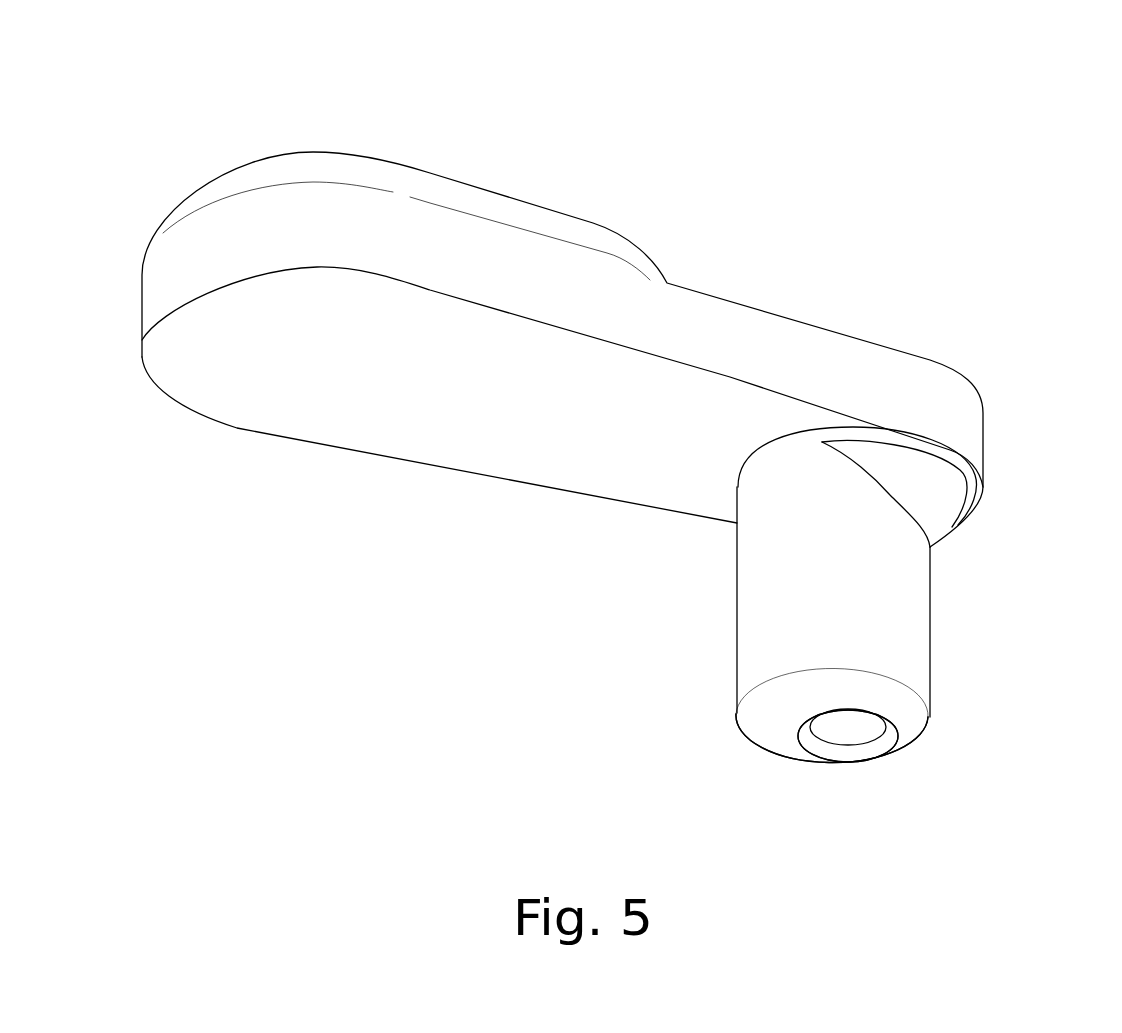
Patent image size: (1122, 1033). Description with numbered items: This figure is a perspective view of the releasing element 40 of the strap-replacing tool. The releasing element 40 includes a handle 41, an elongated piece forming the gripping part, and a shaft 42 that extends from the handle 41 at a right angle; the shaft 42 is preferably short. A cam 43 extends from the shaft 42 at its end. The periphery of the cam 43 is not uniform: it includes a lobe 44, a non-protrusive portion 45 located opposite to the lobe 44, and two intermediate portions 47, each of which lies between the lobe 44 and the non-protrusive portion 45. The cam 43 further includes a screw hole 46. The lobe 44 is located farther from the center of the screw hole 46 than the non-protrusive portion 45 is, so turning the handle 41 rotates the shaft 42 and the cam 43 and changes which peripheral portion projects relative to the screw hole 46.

The releasing element 40 is at (363, 170).
The handle 41 is at (537, 457).
The shaft 42 is at (963, 473).
The cam 43 is at (922, 870).
The lobe 44 is at (777, 710).
The non-protrusive portion 45 is at (897, 750).
The screw hole 46 is at (850, 730).
The intermediate portion 47 is at (877, 615).